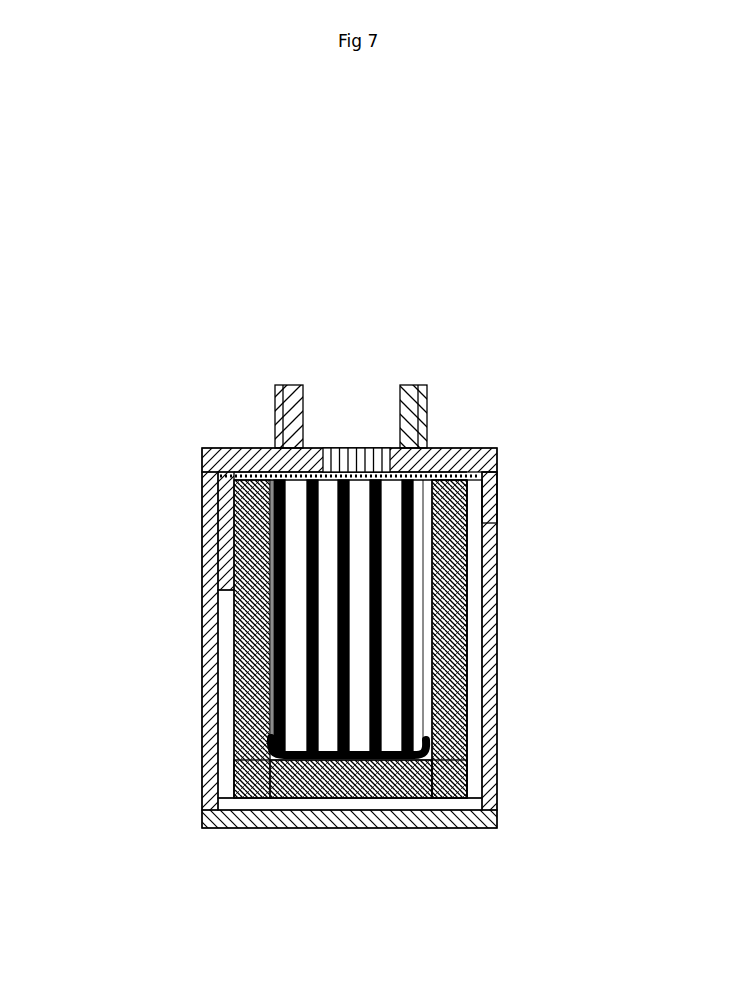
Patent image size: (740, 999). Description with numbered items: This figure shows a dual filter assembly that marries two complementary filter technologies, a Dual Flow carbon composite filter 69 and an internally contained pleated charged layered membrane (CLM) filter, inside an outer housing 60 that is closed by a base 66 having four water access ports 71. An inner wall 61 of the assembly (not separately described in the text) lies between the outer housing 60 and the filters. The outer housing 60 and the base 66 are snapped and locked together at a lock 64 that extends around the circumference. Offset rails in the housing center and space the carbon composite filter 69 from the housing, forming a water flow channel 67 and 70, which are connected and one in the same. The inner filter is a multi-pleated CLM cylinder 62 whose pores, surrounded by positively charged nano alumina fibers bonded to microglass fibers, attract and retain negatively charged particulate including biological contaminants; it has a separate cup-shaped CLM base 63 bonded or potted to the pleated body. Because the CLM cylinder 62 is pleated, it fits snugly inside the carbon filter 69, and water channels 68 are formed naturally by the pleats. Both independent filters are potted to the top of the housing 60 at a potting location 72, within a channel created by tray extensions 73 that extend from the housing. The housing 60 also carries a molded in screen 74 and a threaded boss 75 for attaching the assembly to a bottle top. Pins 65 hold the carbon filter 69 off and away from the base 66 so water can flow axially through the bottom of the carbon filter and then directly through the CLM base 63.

The outer housing 60 is at (198, 472).
The inner vessel wall 61 is at (215, 553).
The CLM pleated cylinder 62 is at (333, 690).
The CLM base 63 is at (290, 760).
The snap lock 64 is at (225, 798).
The pins 65 is at (273, 800).
The base 66 is at (346, 812).
The water flow channel 67 is at (400, 805).
The water channels 68 is at (420, 720).
The carbon composite filter 69 is at (462, 660).
The water flow channel 70 is at (470, 574).
The water access ports 71 is at (503, 499).
The potting 72 is at (493, 448).
The tray extensions 73 is at (420, 445).
The molded in screen 74 is at (348, 445).
The threaded boss 75 is at (290, 382).